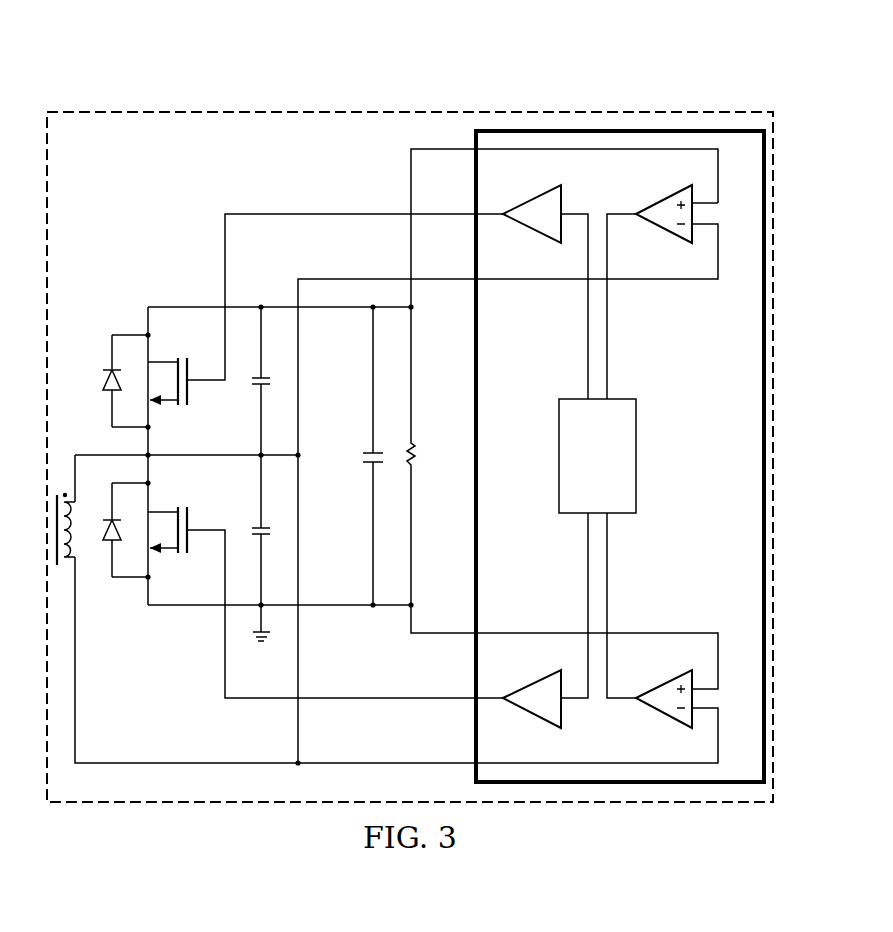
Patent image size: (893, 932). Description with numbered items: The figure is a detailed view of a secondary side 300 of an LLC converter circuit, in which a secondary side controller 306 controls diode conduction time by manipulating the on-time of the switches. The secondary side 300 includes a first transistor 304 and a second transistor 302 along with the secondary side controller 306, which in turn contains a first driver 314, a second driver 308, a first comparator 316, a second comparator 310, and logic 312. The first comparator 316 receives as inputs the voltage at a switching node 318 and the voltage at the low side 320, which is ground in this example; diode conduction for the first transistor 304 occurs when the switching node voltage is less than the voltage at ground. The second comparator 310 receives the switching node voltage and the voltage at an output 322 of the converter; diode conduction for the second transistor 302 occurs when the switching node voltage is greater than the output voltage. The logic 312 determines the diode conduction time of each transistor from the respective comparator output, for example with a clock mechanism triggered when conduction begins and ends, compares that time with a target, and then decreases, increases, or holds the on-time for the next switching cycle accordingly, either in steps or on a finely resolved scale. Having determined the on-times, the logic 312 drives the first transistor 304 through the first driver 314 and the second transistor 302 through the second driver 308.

The secondary side 300 is at (252, 76).
The second transistor 302 is at (188, 390).
The first transistor 304 is at (190, 522).
The secondary side controller 306 is at (718, 507).
The second driver 308 is at (532, 199).
The second comparator 310 is at (662, 200).
The logic 312 is at (616, 484).
The first driver 314 is at (532, 713).
The first comparator 316 is at (662, 713).
The switching node 318 is at (300, 457).
The low side 320 is at (406, 608).
The output 322 is at (412, 310).